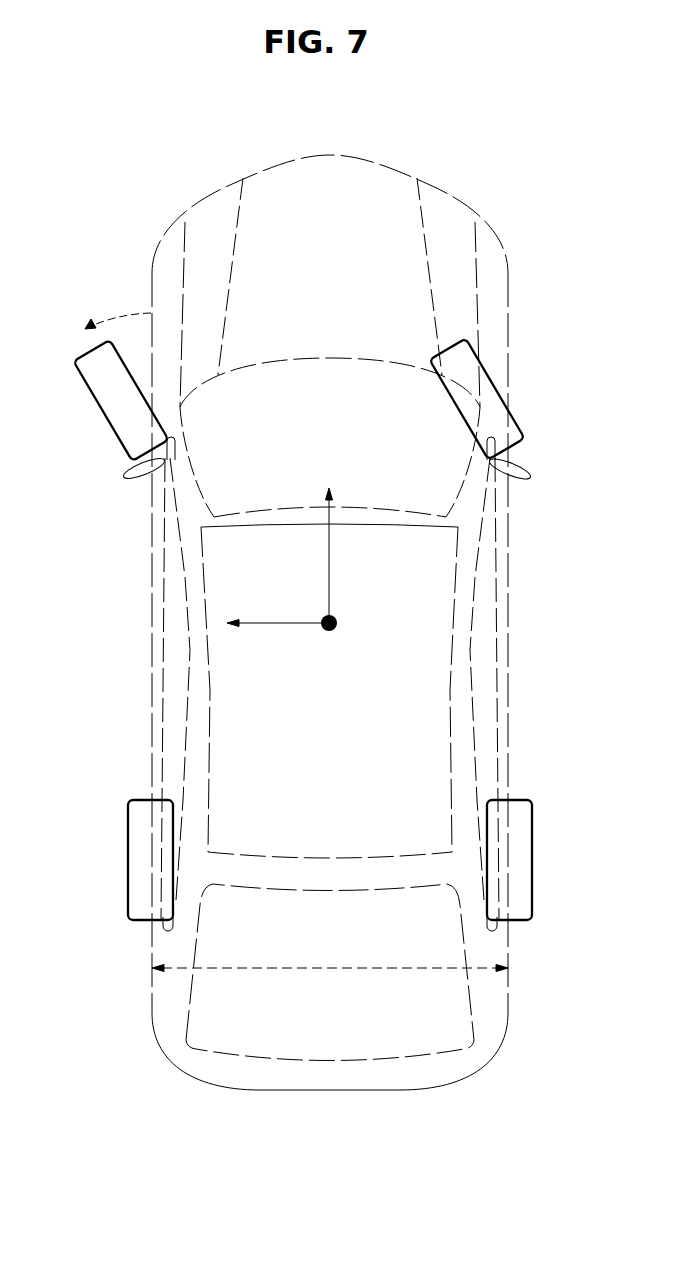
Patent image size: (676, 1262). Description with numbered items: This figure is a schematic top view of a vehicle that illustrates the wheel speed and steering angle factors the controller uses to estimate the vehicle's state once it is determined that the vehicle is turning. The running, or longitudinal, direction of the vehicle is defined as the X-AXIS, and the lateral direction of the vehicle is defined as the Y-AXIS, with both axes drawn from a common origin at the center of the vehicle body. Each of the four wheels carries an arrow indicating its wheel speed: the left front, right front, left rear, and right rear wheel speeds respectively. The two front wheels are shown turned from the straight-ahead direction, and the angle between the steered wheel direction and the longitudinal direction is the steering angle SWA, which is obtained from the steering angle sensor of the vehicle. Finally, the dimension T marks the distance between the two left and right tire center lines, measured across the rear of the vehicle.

The steering angle SWA is at (92, 334).
The X-axis X-AXIS is at (331, 539).
The Y-axis Y-AXIS is at (235, 624).
The distance between two left and right tire center lines T is at (330, 952).